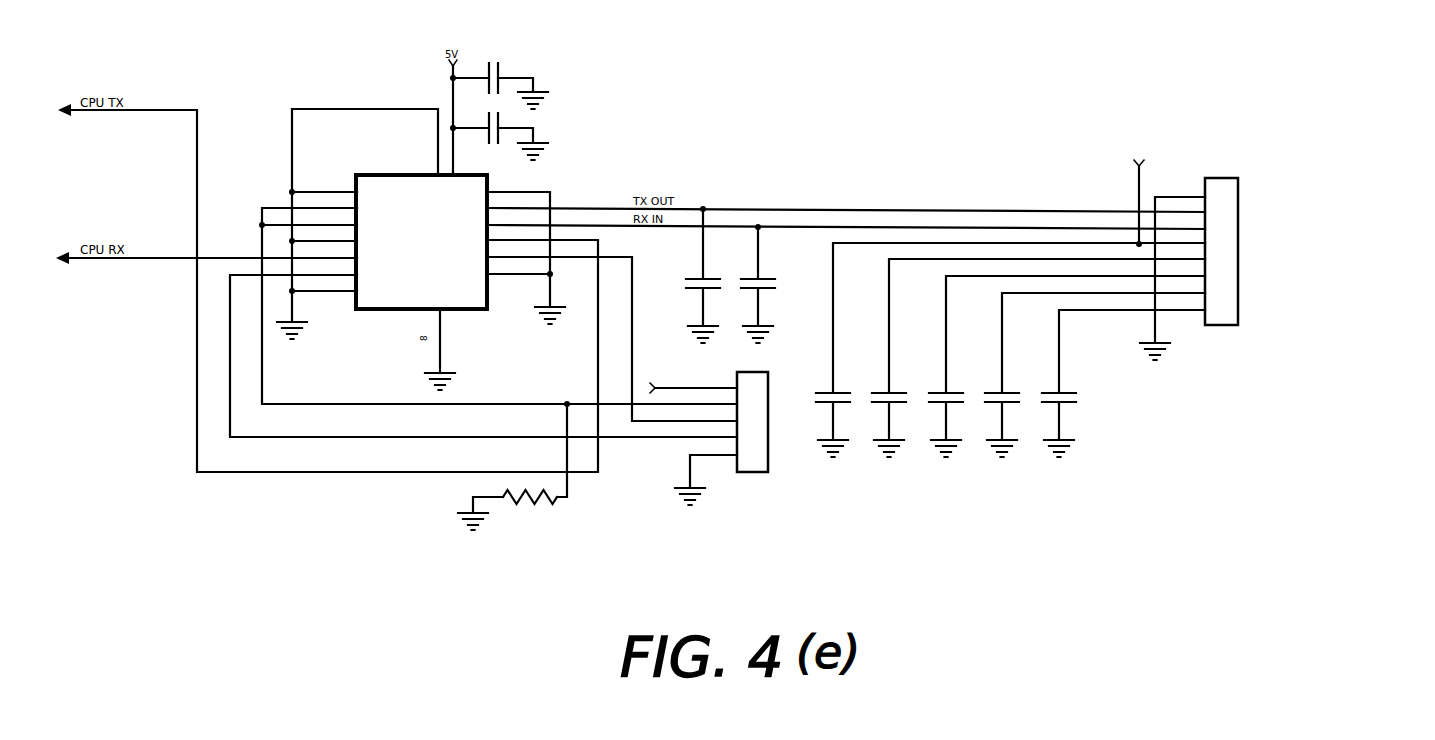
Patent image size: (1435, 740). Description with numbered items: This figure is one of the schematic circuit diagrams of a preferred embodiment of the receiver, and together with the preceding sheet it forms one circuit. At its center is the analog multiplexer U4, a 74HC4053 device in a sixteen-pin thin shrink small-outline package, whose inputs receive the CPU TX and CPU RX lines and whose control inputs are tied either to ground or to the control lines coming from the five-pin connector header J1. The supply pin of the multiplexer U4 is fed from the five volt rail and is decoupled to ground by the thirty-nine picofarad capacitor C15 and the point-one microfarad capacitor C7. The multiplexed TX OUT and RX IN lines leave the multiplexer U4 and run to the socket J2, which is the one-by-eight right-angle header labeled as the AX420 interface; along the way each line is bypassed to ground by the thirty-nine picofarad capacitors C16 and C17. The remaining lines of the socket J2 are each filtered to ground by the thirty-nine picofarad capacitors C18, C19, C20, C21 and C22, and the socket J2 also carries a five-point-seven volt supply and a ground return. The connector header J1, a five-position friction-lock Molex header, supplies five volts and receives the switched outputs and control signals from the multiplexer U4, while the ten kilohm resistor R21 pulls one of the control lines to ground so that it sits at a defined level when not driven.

The analog multiplexer U4 is at (421, 261).
The capacitor C15 is at (500, 75).
The capacitor C7 is at (500, 132).
The capacitor C16 is at (714, 274).
The capacitor C17 is at (769, 283).
The capacitor C18 is at (1010, 350).
The capacitor C19 is at (1038, 358).
The capacitor C20 is at (1067, 366).
The capacitor C21 is at (1095, 375).
The capacitor C22 is at (1123, 383).
The connector header J1 is at (711, 430).
The resistor R21 is at (512, 467).
The socket J2 is at (1273, 254).